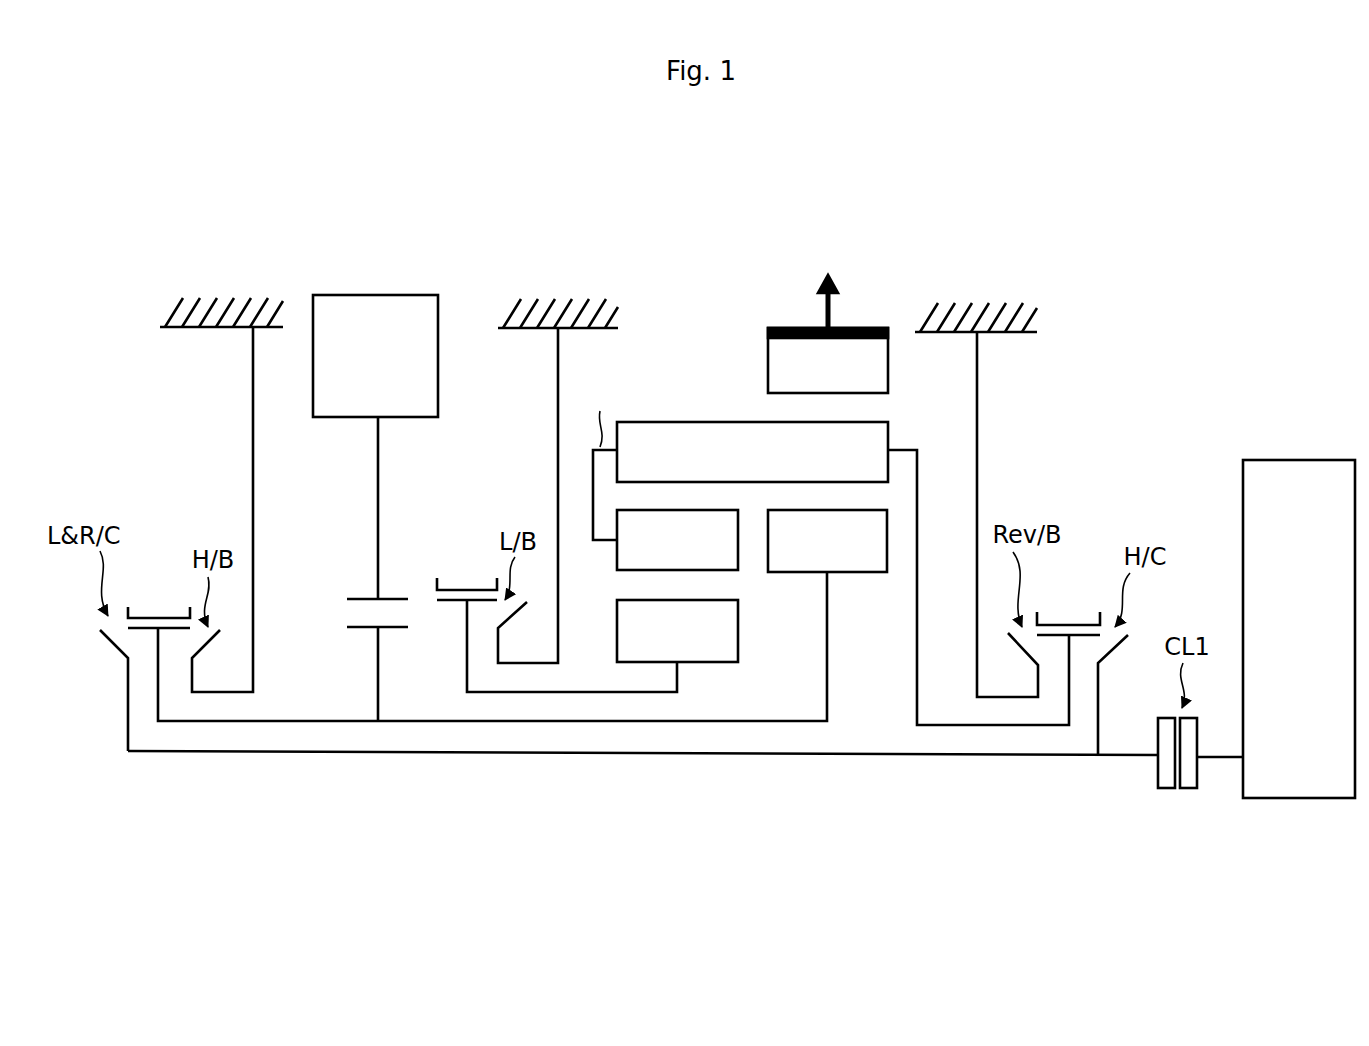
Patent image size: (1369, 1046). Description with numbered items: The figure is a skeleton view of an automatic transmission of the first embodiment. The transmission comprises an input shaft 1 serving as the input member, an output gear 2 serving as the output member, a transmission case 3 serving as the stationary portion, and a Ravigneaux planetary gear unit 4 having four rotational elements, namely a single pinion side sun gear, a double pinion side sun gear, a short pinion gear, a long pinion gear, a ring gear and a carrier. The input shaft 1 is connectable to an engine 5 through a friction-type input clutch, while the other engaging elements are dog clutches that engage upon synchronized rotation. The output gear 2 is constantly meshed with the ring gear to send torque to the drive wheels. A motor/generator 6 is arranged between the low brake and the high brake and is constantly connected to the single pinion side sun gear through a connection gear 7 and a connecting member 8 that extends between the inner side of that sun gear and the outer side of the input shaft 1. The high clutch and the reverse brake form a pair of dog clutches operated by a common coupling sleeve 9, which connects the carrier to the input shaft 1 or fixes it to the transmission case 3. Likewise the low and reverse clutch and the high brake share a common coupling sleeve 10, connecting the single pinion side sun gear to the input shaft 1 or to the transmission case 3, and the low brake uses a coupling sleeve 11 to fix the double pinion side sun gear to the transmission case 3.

The input shaft 1 is at (1013, 760).
The output gear 2 is at (797, 325).
The transmission case 3 is at (180, 328).
The Ravigneaux planetary gear unit 4 is at (704, 401).
The engine 5 is at (1288, 458).
The motor/generator 6 is at (368, 293).
The connection gear 7 is at (343, 613).
The connecting member 8 is at (762, 720).
The common coupling sleeve 9 is at (1068, 623).
The common coupling sleeve 10 is at (165, 618).
The coupling sleeve 11 is at (470, 590).